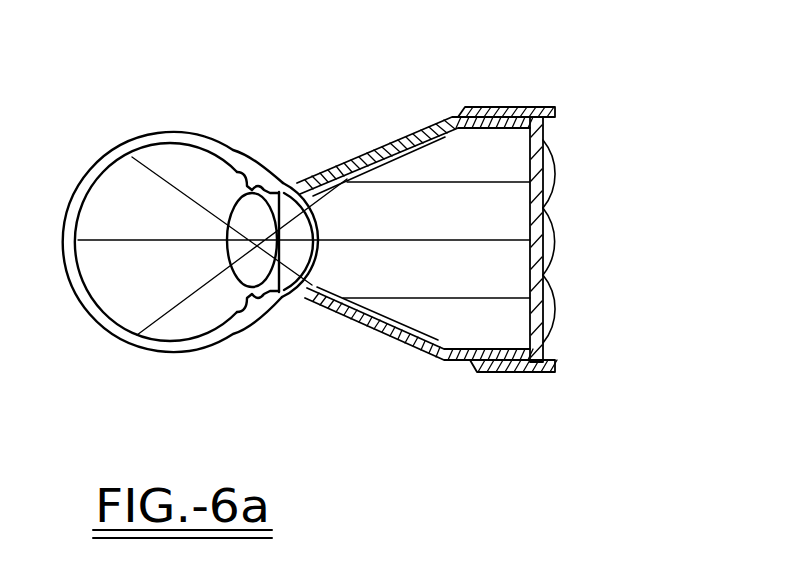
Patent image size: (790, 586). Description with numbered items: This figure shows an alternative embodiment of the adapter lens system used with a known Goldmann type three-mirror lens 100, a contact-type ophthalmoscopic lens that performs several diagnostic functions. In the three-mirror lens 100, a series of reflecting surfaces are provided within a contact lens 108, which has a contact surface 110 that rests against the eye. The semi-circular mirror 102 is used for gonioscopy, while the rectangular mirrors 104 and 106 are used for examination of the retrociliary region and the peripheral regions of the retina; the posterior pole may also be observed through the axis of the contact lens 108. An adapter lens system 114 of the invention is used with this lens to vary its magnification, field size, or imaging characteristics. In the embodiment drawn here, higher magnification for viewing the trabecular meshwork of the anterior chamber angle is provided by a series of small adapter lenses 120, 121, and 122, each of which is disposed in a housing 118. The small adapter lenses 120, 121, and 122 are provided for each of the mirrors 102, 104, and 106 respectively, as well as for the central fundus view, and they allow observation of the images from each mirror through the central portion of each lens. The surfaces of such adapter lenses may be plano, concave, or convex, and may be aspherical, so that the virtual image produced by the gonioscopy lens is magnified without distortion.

The Goldmann type three-mirror lens 100 is at (363, 140).
The semi-circular mirror 102 is at (452, 228).
The rectangular mirror 104 is at (425, 148).
The rectangular mirror 106 is at (418, 326).
The contact lens 108 is at (448, 346).
The contact surface 110 is at (299, 277).
The adapter lens system 114 is at (563, 152).
The housing 118 is at (555, 358).
The small adapter lens 120 is at (553, 242).
The small adapter lens 121 is at (553, 178).
The small adapter lens 122 is at (553, 303).